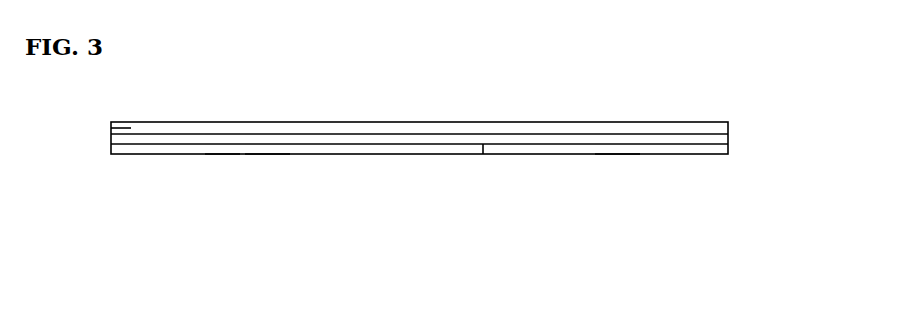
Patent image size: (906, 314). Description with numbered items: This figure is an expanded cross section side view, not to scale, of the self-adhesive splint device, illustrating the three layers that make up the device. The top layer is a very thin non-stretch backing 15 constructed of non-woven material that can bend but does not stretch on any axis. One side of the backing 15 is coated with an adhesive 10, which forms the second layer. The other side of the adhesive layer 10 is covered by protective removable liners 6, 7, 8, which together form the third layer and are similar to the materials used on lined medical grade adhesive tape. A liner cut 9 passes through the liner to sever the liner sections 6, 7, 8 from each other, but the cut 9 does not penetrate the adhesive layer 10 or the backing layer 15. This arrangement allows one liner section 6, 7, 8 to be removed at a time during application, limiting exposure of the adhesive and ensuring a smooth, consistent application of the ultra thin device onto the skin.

The adhesive 10 is at (718, 134).
The non-stretch backing 15 is at (111, 128).
The protective removable liner 7 is at (221, 161).
The protective removable liner 8 is at (262, 154).
The liner cut 9 is at (484, 155).
The protective removable liner 6 is at (615, 154).